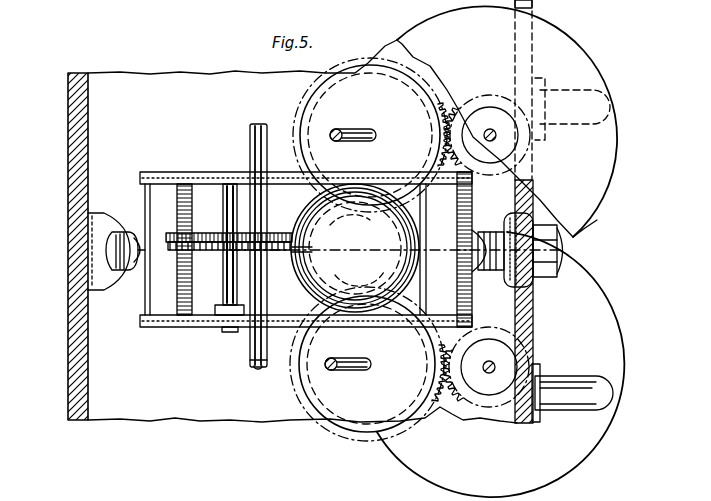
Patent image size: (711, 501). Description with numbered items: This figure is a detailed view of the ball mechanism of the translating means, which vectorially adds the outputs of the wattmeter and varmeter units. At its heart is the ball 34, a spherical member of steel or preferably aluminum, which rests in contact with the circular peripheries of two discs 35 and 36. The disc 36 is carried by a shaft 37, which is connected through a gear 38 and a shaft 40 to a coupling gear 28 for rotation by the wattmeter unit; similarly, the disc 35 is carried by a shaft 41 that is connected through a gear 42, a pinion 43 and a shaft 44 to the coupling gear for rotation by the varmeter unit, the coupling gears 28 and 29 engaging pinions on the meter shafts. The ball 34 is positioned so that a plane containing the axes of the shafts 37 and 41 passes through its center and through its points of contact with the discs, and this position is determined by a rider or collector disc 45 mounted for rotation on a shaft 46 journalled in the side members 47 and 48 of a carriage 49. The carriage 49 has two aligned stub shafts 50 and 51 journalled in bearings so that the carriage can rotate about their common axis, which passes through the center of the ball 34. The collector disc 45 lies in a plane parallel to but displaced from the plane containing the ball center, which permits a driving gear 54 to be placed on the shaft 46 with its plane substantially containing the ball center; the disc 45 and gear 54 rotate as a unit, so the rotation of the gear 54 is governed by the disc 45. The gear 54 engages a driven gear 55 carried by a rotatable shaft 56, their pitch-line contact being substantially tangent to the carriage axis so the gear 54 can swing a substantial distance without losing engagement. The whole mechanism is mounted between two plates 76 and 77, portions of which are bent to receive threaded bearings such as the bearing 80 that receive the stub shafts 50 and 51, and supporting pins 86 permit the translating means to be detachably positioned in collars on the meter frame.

The coupling gear 28 is at (618, 152).
The coupling gear 29 is at (620, 344).
The ball 34 is at (316, 200).
The disc 35 is at (301, 102).
The disc 36 is at (308, 392).
The shaft 37 is at (356, 371).
The gear 38 is at (440, 405).
The shaft 40 is at (492, 362).
The shaft 41 is at (374, 130).
The gear 42 is at (425, 90).
The pinion 43 is at (470, 108).
The shaft 44 is at (496, 137).
The collector disc 45 is at (176, 236).
The shaft 46 is at (222, 203).
The side member 47 is at (292, 184).
The side member 48 is at (206, 328).
The carriage 49 is at (190, 178).
The stub shaft 50 is at (132, 230).
The stub shaft 51 is at (480, 226).
The driving gear 54 is at (226, 252).
The driven gear 55 is at (302, 264).
The shaft 56 is at (250, 364).
The plate 76 is at (68, 178).
The plate 77 is at (534, 332).
The bearing 80 is at (122, 288).
The supporting pin 86 is at (602, 92).